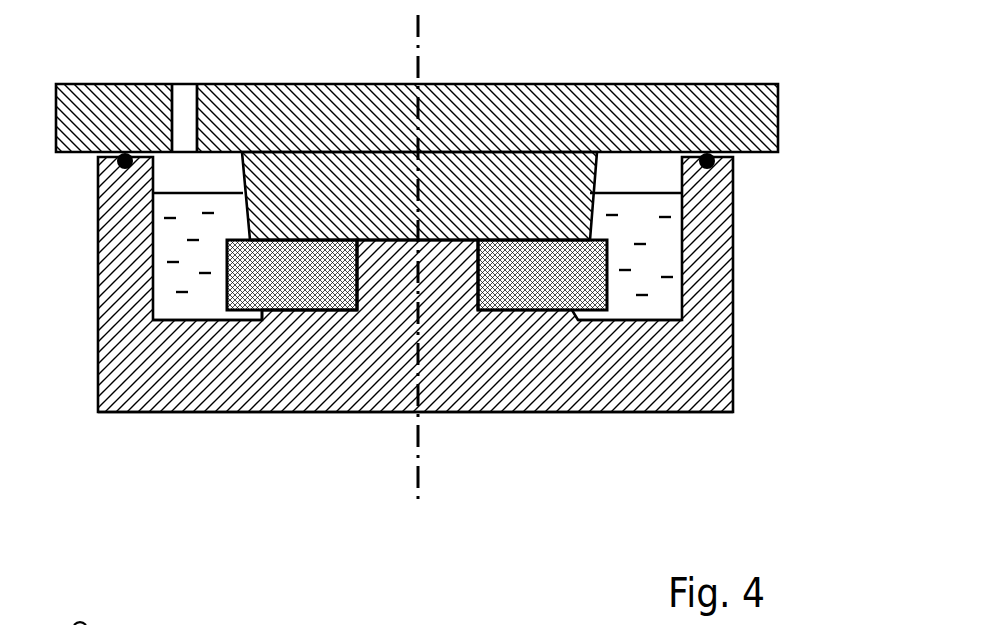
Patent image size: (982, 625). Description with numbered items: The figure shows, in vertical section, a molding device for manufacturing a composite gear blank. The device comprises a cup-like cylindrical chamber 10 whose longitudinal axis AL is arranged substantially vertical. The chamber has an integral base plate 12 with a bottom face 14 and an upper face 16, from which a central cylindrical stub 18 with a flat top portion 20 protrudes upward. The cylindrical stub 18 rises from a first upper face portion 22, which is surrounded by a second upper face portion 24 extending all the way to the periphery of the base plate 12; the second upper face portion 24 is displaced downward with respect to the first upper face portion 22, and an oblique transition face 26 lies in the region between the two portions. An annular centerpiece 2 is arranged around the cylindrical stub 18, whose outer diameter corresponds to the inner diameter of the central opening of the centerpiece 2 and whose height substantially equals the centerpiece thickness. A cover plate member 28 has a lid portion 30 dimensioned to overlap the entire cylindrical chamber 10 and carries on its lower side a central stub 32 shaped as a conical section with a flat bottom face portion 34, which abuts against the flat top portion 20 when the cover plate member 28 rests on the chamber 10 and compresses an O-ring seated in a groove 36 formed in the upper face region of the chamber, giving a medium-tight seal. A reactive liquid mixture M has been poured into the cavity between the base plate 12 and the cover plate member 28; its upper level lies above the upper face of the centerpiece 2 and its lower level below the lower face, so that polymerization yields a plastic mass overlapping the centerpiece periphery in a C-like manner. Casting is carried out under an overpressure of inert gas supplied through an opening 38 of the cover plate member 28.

The centerpiece 2 is at (580, 277).
The cylindrical chamber 10 is at (710, 222).
The base plate 12 is at (665, 363).
The bottom face 14 is at (552, 412).
The upper face 16 is at (630, 320).
The central cylindrical stub 18 is at (436, 265).
The flat top portion 20 is at (461, 240).
The first upper face portion 22 is at (315, 310).
The second upper face portion 24 is at (180, 320).
The oblique transition face 26 is at (262, 313).
The cover plate member 28 is at (752, 68).
The lid portion 30 is at (683, 88).
The central stub 32 is at (527, 172).
The flat bottom face portion 34 is at (320, 240).
The groove 36 is at (712, 165).
The opening 38 is at (187, 93).
The reactive liquid mixture M is at (178, 275).
The longitudinal axis AL is at (415, 490).